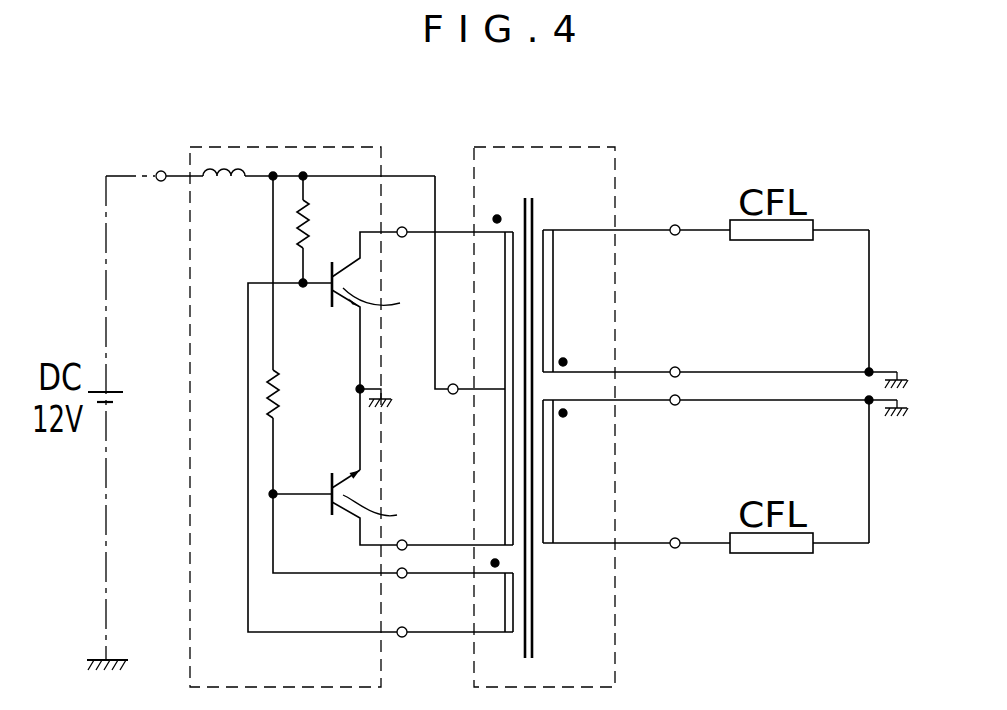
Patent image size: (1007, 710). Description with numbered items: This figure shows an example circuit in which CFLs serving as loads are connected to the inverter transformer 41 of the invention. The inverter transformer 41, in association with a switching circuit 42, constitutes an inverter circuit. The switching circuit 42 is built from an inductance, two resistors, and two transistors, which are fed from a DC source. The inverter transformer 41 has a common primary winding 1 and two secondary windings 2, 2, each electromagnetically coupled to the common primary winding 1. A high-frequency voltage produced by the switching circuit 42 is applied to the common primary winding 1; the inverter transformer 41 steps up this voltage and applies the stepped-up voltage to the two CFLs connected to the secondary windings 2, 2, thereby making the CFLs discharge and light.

The primary winding 1 is at (517, 222).
The secondary winding 2 is at (563, 222).
The inverter transformer 41 is at (572, 165).
The switching circuit 42 is at (343, 163).